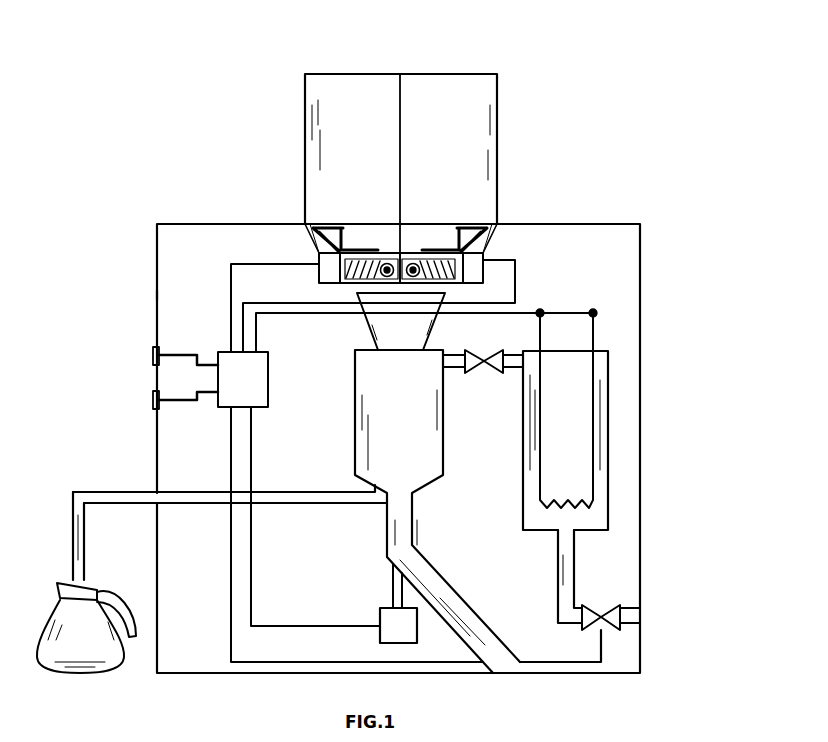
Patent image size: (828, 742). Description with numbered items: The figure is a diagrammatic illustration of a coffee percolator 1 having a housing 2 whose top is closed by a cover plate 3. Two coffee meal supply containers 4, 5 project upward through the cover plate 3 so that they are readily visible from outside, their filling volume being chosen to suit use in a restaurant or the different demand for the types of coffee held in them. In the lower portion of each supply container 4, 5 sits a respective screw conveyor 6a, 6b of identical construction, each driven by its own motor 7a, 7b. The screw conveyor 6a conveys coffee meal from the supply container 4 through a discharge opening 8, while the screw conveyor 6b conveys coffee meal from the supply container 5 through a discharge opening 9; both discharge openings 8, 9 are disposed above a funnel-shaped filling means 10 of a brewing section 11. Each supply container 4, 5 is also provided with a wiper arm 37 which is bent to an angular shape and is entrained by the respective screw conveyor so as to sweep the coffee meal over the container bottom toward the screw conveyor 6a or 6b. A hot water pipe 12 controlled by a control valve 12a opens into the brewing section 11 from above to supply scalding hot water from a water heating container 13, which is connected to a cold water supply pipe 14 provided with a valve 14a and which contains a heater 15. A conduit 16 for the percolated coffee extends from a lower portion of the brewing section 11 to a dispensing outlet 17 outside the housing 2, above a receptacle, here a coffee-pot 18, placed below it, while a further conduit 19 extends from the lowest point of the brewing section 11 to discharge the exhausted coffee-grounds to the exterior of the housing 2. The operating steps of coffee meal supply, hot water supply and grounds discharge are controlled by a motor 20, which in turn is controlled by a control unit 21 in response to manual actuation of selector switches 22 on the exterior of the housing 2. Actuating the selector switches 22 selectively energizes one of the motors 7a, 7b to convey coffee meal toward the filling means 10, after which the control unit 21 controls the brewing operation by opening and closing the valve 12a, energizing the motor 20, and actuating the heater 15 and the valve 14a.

The coffee percolator 1 is at (652, 205).
The housing 2 is at (157, 296).
The cover plate 3 is at (192, 224).
The coffee meal supply container 4 is at (360, 156).
The coffee meal supply container 5 is at (455, 156).
The screw conveyor 6a is at (370, 248).
The screw conveyor 6b is at (452, 253).
The motor 7a is at (320, 255).
The motor 7b is at (485, 258).
The discharge opening 8 is at (386, 262).
The discharge opening 9 is at (413, 262).
The funnel-shaped filling means 10 is at (410, 330).
The brewing section 11 is at (410, 432).
The hot water pipe 12 is at (452, 368).
The control valve 12a is at (484, 372).
The water heating container 13 is at (576, 392).
The cold water supply pipe 14 is at (576, 572).
The valve 14a is at (604, 622).
The heater 15 is at (580, 506).
The conduit for percolated coffee 16 is at (285, 498).
The dispensing outlet 17 is at (77, 536).
The coffee-pot 18 is at (92, 647).
The conduit 19 is at (456, 613).
The motor 20 is at (380, 612).
The control unit 21 is at (254, 394).
The selector switches 22 is at (153, 354).
The wiper arm 37 is at (318, 215).